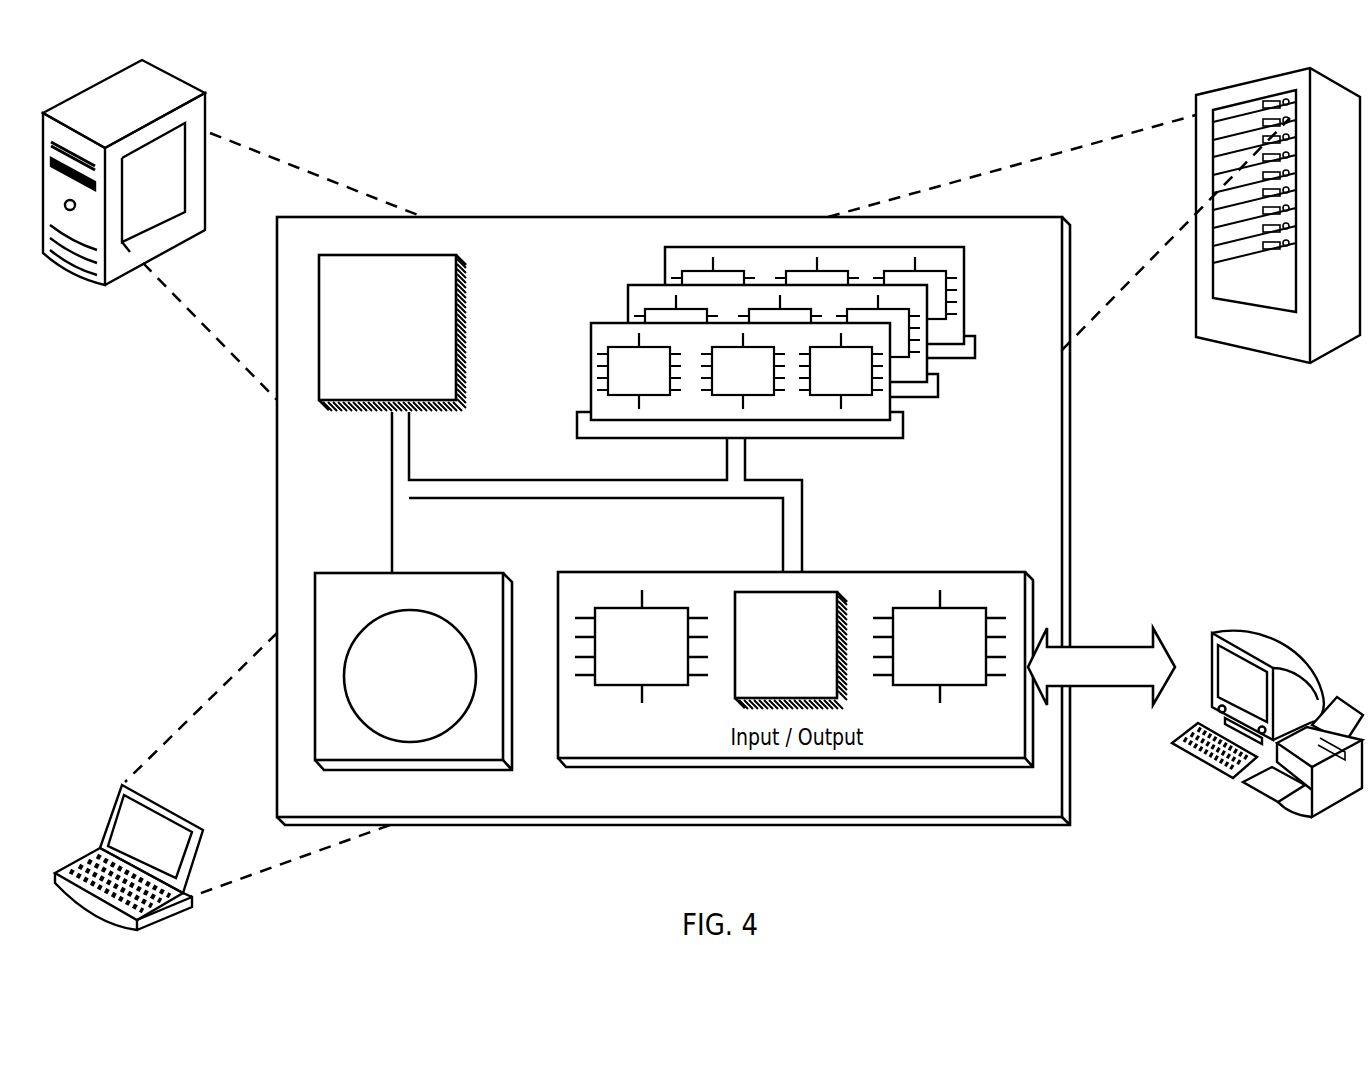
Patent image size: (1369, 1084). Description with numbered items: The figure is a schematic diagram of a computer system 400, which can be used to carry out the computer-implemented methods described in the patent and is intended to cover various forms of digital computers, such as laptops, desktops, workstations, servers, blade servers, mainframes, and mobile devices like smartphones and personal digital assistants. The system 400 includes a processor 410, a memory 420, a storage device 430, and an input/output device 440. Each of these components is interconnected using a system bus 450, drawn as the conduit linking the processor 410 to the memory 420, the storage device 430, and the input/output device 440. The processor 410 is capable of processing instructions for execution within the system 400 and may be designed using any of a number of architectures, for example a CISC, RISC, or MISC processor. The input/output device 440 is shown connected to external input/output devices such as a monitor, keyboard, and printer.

The computer system 400 is at (489, 139).
The processor 410 is at (392, 333).
The memory 420 is at (970, 398).
The storage device 430 is at (413, 671).
The input/output device 440 is at (1210, 640).
The system bus 450 is at (593, 480).